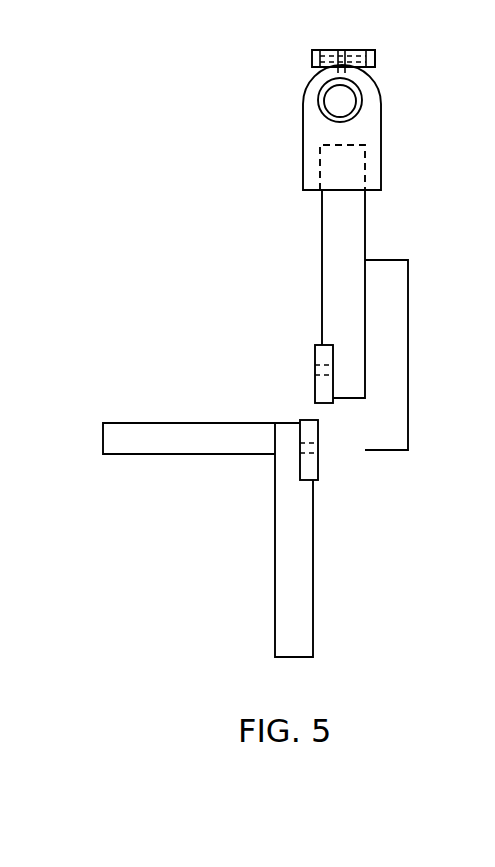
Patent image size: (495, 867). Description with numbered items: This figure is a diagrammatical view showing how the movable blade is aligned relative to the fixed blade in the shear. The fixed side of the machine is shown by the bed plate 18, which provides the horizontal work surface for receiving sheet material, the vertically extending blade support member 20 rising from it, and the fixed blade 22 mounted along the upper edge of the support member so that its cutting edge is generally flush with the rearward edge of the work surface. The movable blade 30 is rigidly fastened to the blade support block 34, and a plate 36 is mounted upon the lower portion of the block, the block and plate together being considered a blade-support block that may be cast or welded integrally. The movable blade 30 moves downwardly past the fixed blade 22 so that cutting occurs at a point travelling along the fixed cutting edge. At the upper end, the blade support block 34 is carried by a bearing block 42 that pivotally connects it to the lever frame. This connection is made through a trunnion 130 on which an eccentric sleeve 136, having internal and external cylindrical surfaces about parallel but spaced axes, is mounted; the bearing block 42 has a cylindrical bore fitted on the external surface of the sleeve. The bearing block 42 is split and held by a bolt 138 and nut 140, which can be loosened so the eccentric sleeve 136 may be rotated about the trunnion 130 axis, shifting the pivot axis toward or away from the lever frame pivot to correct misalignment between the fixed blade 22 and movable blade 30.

The bed plate 18 is at (173, 433).
The blade support member 20 is at (302, 575).
The fixed blade 22 is at (310, 471).
The movable blade 30 is at (320, 355).
The blade support block 34 is at (347, 240).
The plate 36 is at (392, 285).
The bearing block 42 is at (310, 95).
The trunnion 130 is at (343, 102).
The eccentric sleeve 136 is at (358, 112).
The bolt 138 is at (315, 60).
The nut 140 is at (372, 58).